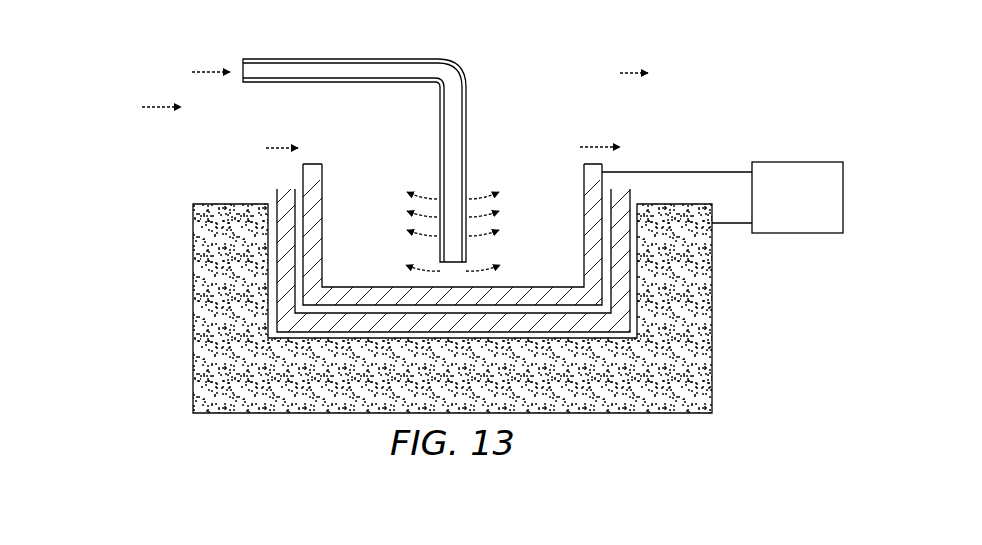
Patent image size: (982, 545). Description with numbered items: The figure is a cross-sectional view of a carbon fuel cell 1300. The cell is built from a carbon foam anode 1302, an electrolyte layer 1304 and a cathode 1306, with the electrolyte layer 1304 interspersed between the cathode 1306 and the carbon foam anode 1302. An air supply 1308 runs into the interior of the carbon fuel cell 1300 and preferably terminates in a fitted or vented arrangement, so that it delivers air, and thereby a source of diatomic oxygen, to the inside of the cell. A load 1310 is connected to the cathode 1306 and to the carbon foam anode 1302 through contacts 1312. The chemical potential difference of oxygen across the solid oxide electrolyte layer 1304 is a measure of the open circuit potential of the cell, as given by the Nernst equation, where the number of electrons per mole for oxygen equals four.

The carbon fuel cell 1300 is at (748, 321).
The carbon foam anode 1302 is at (204, 378).
The electrolyte layer 1304 is at (279, 195).
The cathode 1306 is at (325, 189).
The air supply 1308 is at (275, 58).
The load 1310 is at (797, 162).
The contacts 1312 is at (732, 171).